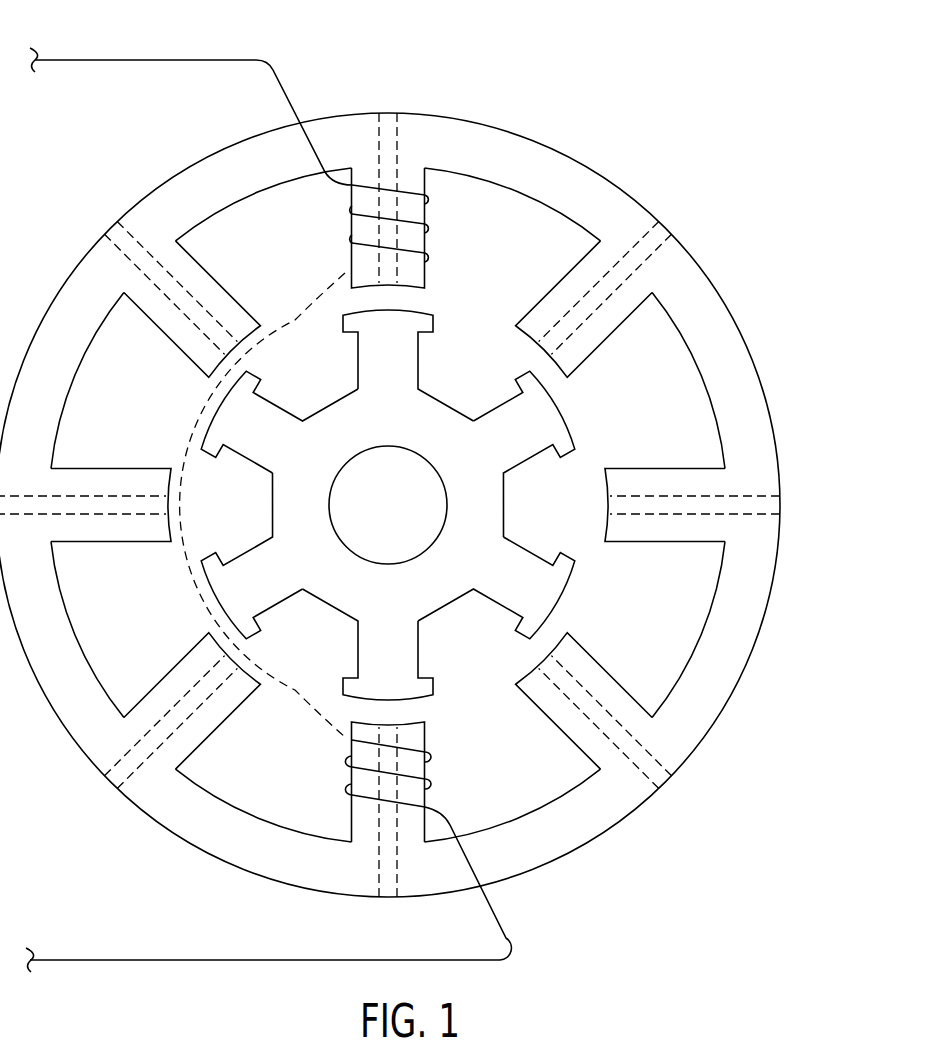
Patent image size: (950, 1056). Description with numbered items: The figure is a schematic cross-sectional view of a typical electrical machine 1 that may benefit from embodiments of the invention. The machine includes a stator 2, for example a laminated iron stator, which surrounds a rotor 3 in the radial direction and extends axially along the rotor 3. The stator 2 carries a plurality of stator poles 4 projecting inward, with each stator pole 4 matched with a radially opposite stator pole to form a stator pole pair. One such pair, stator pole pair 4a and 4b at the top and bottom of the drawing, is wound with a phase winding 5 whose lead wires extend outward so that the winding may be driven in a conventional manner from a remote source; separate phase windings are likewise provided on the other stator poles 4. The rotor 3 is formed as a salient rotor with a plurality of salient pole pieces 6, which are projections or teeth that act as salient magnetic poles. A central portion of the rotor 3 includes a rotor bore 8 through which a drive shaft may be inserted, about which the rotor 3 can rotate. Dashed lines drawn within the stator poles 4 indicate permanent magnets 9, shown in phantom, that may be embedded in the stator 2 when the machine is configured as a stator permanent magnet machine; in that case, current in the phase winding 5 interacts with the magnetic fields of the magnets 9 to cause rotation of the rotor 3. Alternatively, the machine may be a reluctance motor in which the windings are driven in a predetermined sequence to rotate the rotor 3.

The electrical machine 1 is at (563, 121).
The stator 2 is at (697, 275).
The rotor 3 is at (207, 605).
The stator pole 4 is at (115, 474).
The stator pole pair 4a is at (437, 210).
The stator pole pair 4b is at (430, 768).
The phase winding 5 is at (152, 60).
The salient pole piece 6 is at (256, 452).
The rotor bore 8 is at (396, 519).
The permanent magnet 9 is at (678, 500).